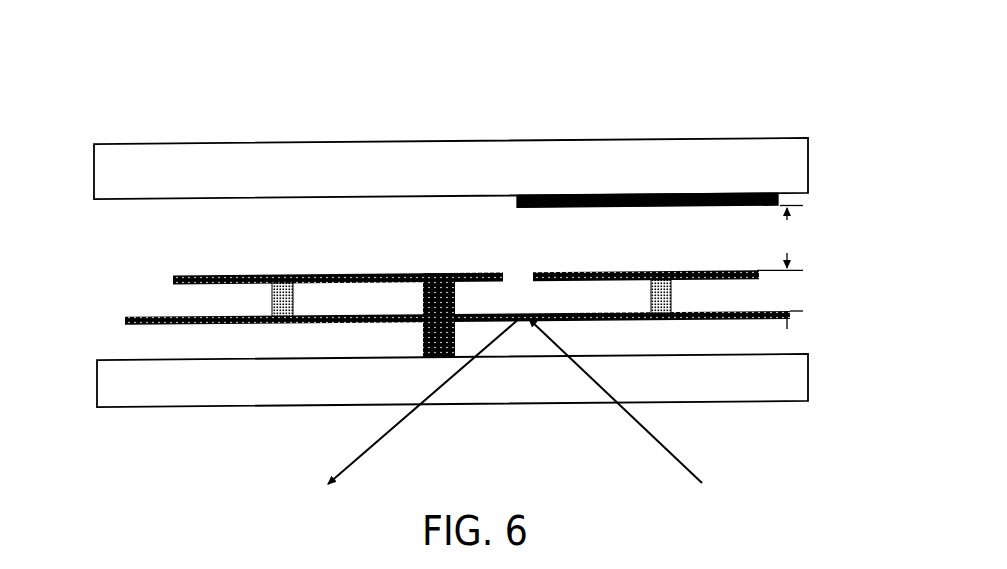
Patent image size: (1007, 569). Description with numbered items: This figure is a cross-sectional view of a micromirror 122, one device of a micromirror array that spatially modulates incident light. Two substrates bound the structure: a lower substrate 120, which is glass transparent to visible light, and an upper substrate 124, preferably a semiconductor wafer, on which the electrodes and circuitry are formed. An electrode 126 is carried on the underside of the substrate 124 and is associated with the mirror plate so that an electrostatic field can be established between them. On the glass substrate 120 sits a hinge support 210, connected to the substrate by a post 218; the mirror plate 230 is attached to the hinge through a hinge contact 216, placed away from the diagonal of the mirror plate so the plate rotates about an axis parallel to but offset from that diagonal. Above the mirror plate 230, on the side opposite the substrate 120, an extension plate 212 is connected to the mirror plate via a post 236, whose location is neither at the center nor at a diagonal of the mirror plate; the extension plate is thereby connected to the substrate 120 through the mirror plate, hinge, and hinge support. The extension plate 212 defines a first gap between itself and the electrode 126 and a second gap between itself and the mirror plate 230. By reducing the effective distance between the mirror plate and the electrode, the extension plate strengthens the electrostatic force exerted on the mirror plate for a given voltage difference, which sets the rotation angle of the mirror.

The substrate 120 is at (730, 401).
The micromirror 122 is at (473, 248).
The substrate 124 is at (173, 143).
The electrode 126 is at (738, 192).
The hinge support 210 is at (333, 258).
The extension plate 212 is at (571, 273).
The hinge contact 216 is at (270, 287).
The post 218 is at (423, 298).
The mirror plate 230 is at (773, 316).
The post 236 is at (651, 297).